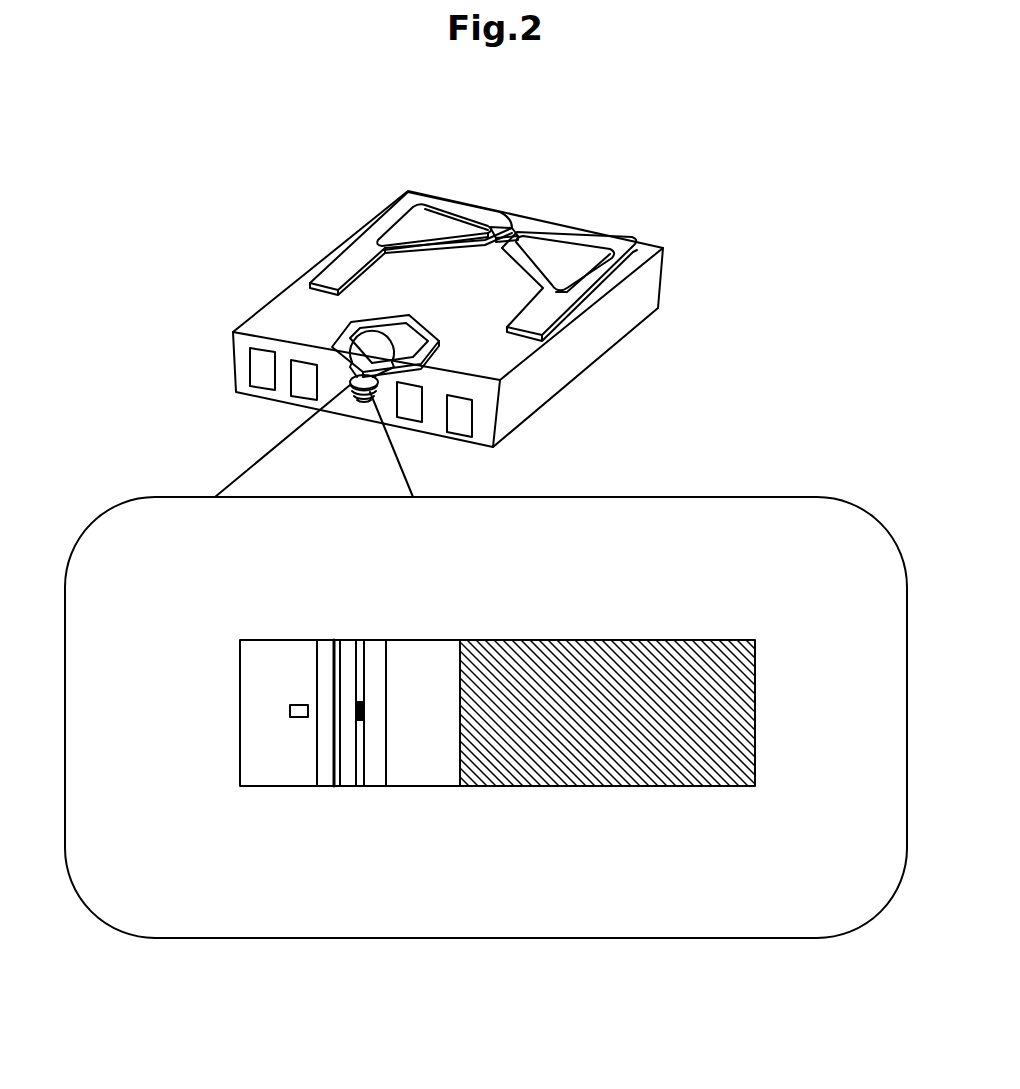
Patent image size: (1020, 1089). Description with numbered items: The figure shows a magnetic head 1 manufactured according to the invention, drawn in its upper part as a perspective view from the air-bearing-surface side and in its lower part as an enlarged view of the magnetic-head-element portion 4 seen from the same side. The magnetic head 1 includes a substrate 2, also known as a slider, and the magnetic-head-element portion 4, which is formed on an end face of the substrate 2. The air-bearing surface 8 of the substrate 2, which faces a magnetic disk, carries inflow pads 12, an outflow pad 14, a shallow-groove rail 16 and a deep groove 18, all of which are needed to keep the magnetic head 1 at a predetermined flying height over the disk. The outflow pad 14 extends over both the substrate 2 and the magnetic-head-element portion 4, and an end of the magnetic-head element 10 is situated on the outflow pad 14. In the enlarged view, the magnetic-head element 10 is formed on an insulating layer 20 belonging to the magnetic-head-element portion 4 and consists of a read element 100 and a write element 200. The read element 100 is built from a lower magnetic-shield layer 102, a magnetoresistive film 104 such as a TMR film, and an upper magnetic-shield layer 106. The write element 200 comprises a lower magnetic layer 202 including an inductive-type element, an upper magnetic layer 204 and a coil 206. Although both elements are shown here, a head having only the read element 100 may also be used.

The magnetic head 1 is at (348, 208).
The substrate 2 is at (527, 397).
The magnetic-head-element portion 4 is at (493, 428).
The air-bearing surface 8 is at (293, 302).
The magnetic-head element 10 is at (347, 362).
The inflow pads 12 is at (428, 222).
The outflow pad 14 is at (408, 337).
The shallow-groove rail 16 is at (512, 228).
The deep groove 18 is at (440, 295).
The insulating layer 20 is at (430, 655).
The read element 100 is at (393, 631).
The lower magnetic-shield layer 102 is at (378, 713).
The magnetoresistive film 104 is at (362, 718).
The upper magnetic-shield layer 106 is at (350, 768).
The write element 200 is at (332, 631).
The lower magnetic layer 202 is at (323, 757).
The upper magnetic layer 204 is at (290, 710).
The coil 206 is at (353, 412).